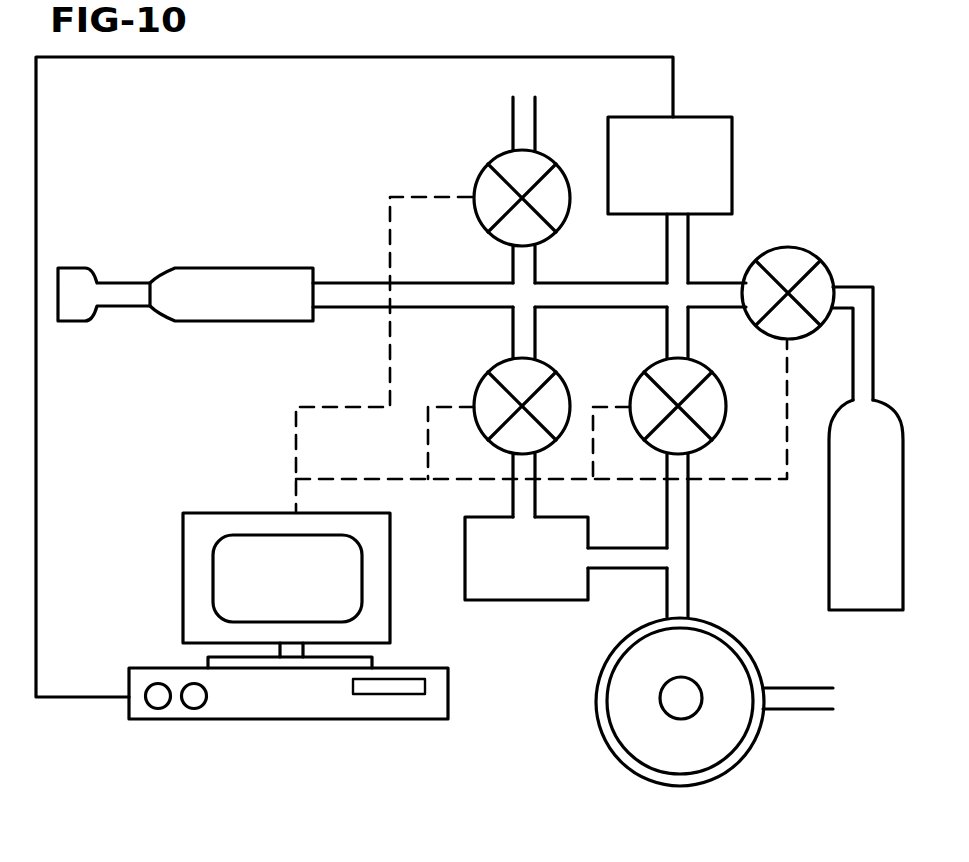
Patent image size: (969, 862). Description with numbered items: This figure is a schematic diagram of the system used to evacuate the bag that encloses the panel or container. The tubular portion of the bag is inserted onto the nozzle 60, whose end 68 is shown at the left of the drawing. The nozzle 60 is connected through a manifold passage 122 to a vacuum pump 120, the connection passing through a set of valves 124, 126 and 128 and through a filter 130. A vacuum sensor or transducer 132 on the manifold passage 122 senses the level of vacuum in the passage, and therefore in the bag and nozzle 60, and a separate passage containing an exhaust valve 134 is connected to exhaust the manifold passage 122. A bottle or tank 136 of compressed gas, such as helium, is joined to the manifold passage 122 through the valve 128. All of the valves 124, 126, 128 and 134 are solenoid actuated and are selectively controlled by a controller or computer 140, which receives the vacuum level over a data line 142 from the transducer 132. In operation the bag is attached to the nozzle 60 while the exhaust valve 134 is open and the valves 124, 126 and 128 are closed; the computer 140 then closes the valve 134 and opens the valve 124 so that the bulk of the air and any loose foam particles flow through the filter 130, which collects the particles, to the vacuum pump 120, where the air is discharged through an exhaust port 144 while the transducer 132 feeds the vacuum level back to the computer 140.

The nozzle 60 is at (229, 250).
The probe tip 68 is at (78, 267).
The vacuum pump 120 is at (598, 678).
The manifold passage 122 is at (625, 283).
The valve 124 is at (488, 370).
The valve 126 is at (643, 370).
The valve 128 is at (790, 246).
The filter 130 is at (553, 578).
The vacuum sensor or transducer 132 is at (694, 180).
The exhaust valve 134 is at (483, 170).
The bottle or tank of compressed gas 136 is at (832, 508).
The controller or computer 140 is at (313, 594).
The data line 142 is at (300, 57).
The exhaust port 144 is at (798, 692).